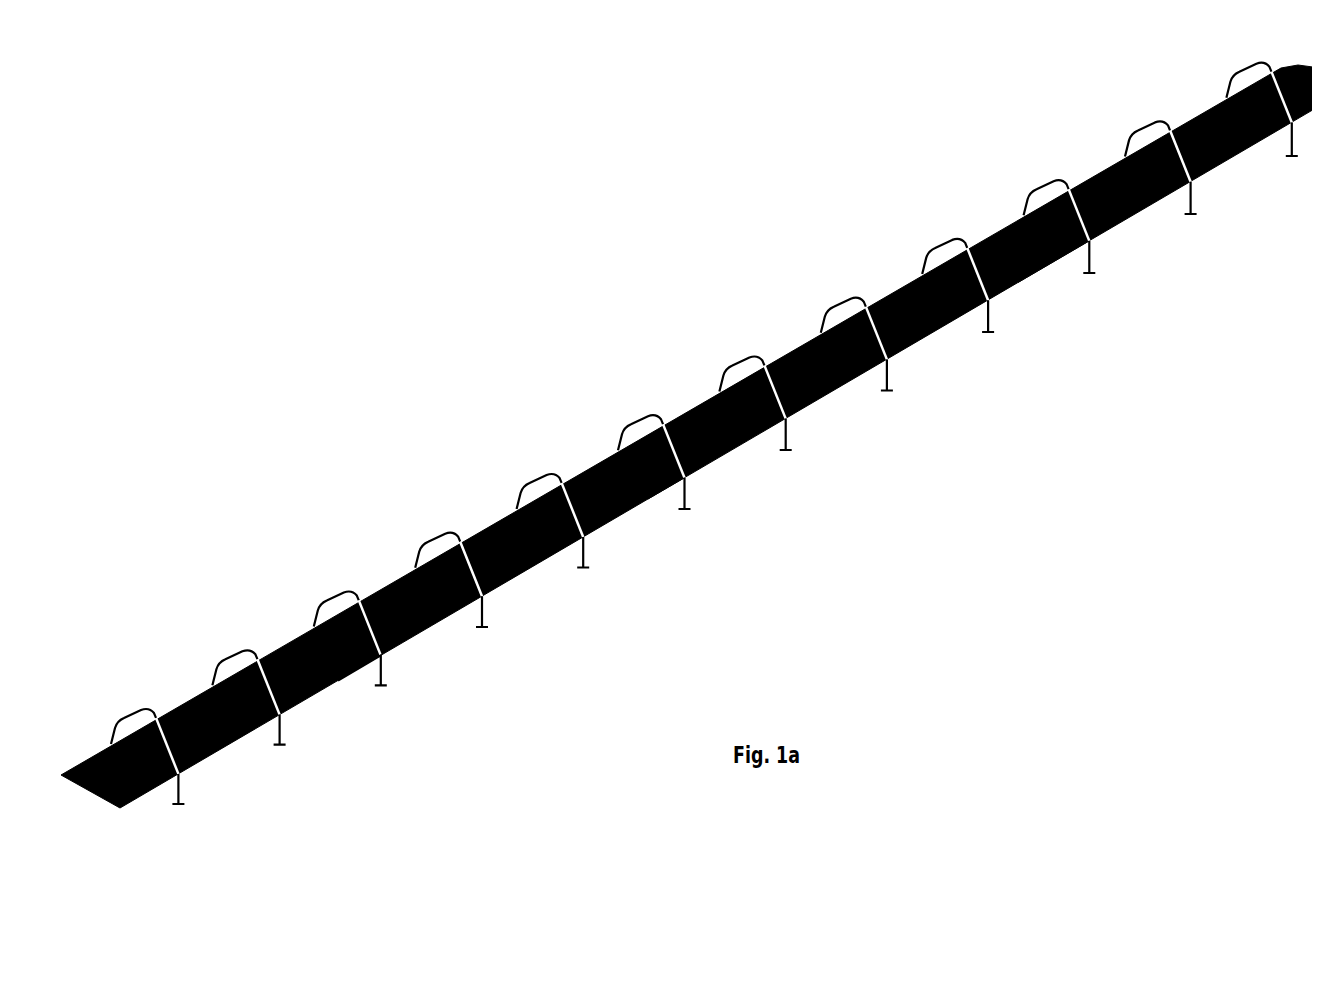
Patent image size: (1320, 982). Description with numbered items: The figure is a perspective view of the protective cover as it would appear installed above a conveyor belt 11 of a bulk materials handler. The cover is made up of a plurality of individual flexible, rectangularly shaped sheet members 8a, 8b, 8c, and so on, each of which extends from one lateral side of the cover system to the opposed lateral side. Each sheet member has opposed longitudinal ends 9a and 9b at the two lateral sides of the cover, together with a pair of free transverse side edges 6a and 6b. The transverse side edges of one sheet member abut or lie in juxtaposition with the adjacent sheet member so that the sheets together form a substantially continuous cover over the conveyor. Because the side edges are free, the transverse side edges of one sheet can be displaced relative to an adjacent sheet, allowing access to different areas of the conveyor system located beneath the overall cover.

The free transverse side edge 6a is at (117, 798).
The free transverse side edge 6b is at (418, 534).
The rectangularly shaped sheet member 8a is at (347, 665).
The rectangularly shaped sheet member 8b is at (655, 490).
The rectangularly shaped sheet member 8c is at (1025, 267).
The longitudinal end 9a is at (433, 616).
The longitudinal end 9b is at (360, 587).
The conveyor belt 11 is at (637, 397).